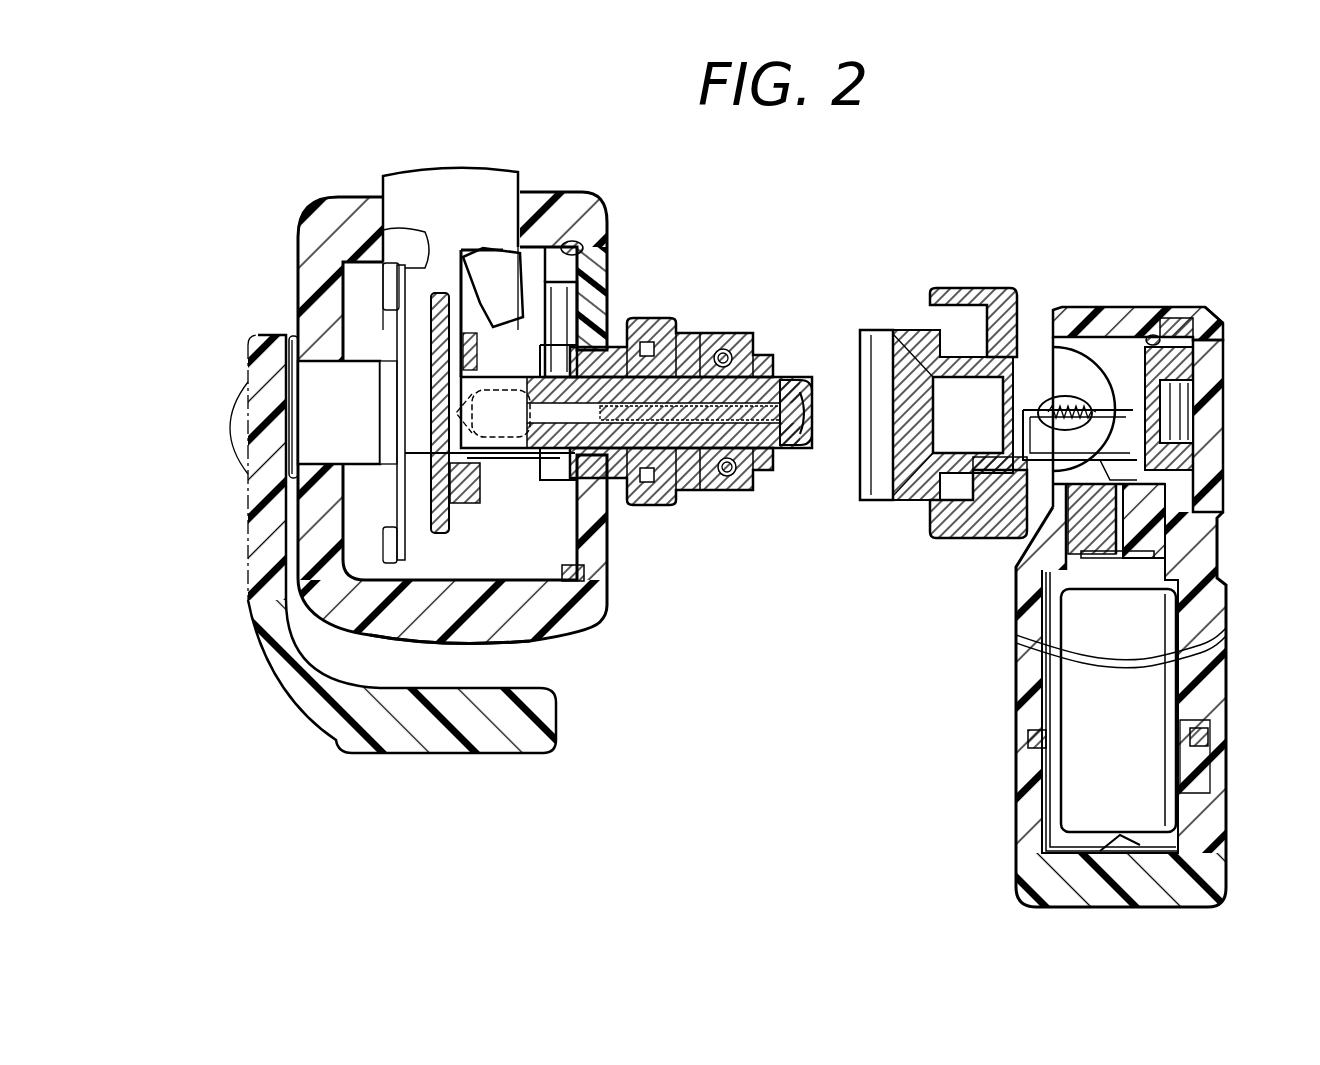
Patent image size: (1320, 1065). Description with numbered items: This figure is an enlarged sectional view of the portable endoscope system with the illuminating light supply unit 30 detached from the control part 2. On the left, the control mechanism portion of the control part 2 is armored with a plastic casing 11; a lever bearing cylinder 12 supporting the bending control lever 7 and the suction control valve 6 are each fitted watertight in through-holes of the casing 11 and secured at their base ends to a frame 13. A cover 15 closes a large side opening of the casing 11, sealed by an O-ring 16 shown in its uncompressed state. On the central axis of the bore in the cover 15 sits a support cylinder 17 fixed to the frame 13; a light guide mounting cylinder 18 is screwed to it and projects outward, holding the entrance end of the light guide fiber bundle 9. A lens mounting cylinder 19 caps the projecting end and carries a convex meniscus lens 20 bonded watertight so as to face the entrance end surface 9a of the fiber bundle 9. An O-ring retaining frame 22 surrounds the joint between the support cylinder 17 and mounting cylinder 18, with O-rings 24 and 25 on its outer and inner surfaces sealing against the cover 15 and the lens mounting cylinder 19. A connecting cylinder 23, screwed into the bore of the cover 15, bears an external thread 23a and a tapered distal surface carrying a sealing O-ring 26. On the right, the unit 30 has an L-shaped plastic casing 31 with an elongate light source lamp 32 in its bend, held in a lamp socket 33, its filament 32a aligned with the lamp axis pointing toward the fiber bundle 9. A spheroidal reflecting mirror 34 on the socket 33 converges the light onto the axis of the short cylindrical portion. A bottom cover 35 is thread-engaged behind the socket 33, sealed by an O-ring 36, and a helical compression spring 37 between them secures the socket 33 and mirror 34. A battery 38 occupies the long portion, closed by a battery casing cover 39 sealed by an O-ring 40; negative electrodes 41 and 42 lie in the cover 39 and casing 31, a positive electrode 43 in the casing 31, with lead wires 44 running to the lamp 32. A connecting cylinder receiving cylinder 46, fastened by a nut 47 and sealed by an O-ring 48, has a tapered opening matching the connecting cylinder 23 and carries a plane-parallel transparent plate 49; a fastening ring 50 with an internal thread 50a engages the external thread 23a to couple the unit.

The control part 2 is at (636, 646).
The suction control valve 6 is at (383, 178).
The bending control lever 7 is at (265, 665).
The light guide fiber bundle 9 is at (755, 350).
The entrance end surface 9a is at (806, 402).
The casing 11 is at (568, 627).
The lever bearing cylinder 12 is at (300, 465).
The frame 13 is at (440, 330).
The cover 15 is at (604, 258).
The sealing O-ring 16 is at (582, 243).
The support cylinder 17 is at (577, 458).
The light guide mounting cylinder 18 is at (762, 456).
The lens mounting cylinder 19 is at (784, 447).
The convex meniscus lens 20 is at (800, 378).
The O-ring retaining frame 22 is at (640, 502).
The connecting cylinder 23 is at (697, 487).
The external thread 23a is at (697, 345).
The O-ring 24 is at (597, 346).
The O-ring 25 is at (672, 345).
The sealing O-ring 26 is at (725, 350).
The illuminating light supply unit 30 is at (1052, 258).
The casing 31 is at (1224, 586).
The light source lamp 32 is at (1048, 315).
The filament 32a is at (1094, 403).
The lamp socket 33 is at (1148, 365).
The spheroidal reflecting mirror 34 is at (1073, 397).
The bottom cover 35 is at (1212, 322).
The sealing O-ring 36 is at (1196, 338).
The helical compression spring 37 is at (1197, 402).
The battery 38 is at (1168, 688).
The battery casing cover 39 is at (1017, 832).
The sealing O-ring 40 is at (1033, 746).
The negative electrode 41 is at (1137, 845).
The negative electrode 42 is at (1033, 618).
The positive electrode 43 is at (1055, 543).
The lead wires 44 is at (1112, 480).
The connecting cylinder receiving cylinder 46 is at (920, 350).
The nut 47 is at (960, 505).
The sealing O-ring 48 is at (932, 508).
The plane-parallel transparent plate 49 is at (1003, 407).
The fastening ring 50 is at (958, 290).
The internal thread 50a is at (874, 340).